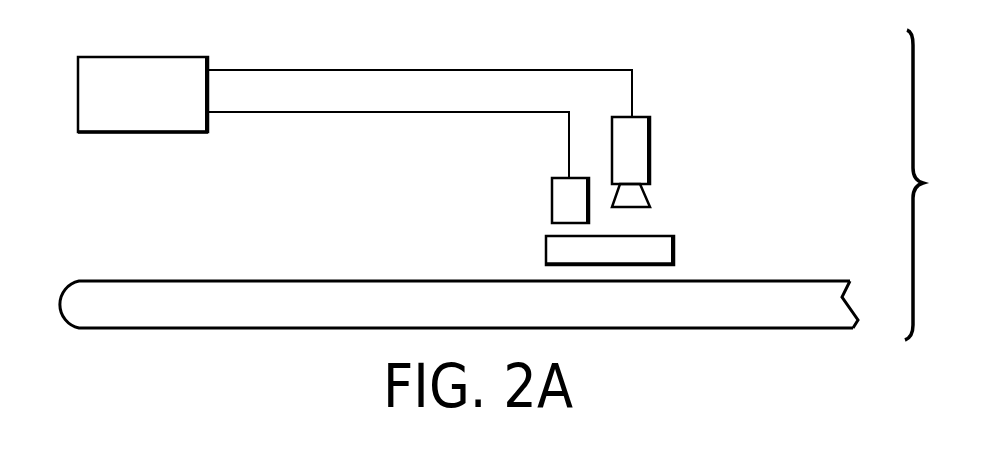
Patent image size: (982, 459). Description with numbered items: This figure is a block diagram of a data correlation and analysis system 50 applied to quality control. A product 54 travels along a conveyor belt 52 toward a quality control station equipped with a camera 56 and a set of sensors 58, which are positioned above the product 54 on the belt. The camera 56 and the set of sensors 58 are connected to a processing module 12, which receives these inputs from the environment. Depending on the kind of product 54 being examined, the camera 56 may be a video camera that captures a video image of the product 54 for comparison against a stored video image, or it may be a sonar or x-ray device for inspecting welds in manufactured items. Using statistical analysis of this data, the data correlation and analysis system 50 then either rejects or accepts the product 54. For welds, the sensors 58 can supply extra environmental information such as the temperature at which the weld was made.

The processing module 12 is at (146, 107).
The data correlation and analysis system 50 is at (937, 185).
The conveyor belt 52 is at (783, 281).
The product 54 is at (674, 249).
The camera 56 is at (650, 150).
The set of sensors 58 is at (552, 200).